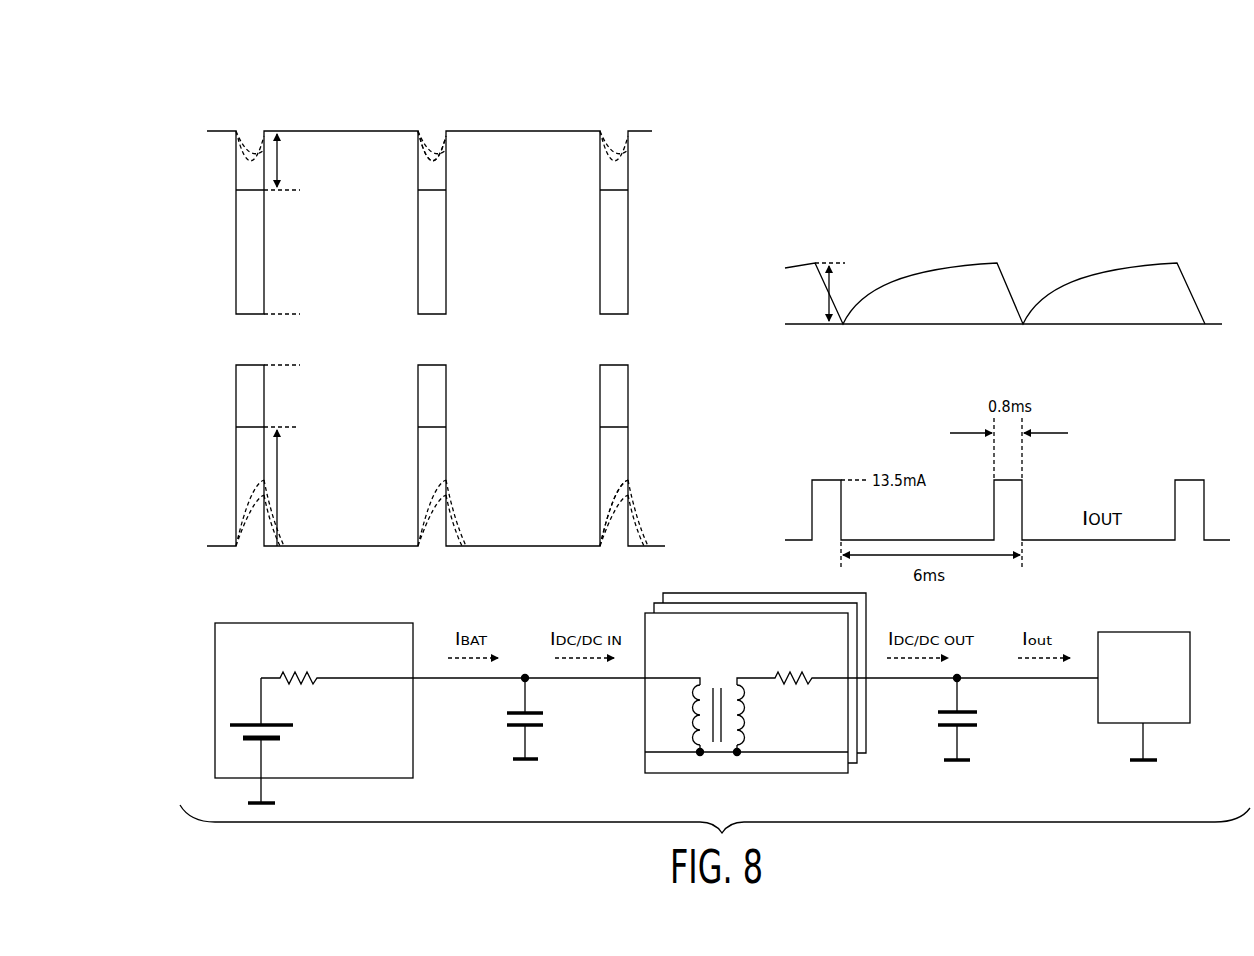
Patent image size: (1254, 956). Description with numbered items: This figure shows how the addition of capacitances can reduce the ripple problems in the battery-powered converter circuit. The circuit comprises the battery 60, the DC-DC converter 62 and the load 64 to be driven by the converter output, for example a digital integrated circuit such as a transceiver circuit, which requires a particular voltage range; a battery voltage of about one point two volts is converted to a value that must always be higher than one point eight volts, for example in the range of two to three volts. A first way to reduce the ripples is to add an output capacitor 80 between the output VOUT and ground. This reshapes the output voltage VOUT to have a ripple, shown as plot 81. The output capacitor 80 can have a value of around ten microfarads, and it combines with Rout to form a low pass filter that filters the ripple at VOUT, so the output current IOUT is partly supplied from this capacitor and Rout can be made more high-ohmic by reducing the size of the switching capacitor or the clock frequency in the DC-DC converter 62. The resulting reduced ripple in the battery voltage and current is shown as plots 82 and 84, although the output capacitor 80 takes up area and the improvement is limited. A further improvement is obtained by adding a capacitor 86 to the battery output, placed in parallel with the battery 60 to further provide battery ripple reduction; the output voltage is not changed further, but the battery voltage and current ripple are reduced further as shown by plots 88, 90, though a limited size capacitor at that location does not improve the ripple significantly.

The battery 60 is at (413, 762).
The DC-DC converter 62 is at (838, 775).
The load 64 is at (1098, 717).
The output capacitor 80 is at (967, 730).
The plot of output voltage 81 is at (978, 262).
The plot of battery voltage ripple 82 is at (421, 152).
The plot of battery current ripple 84 is at (615, 455).
The capacitor 86 is at (535, 728).
The plot of battery voltage ripple 88 is at (628, 182).
The plot of battery current ripple 90 is at (625, 492).